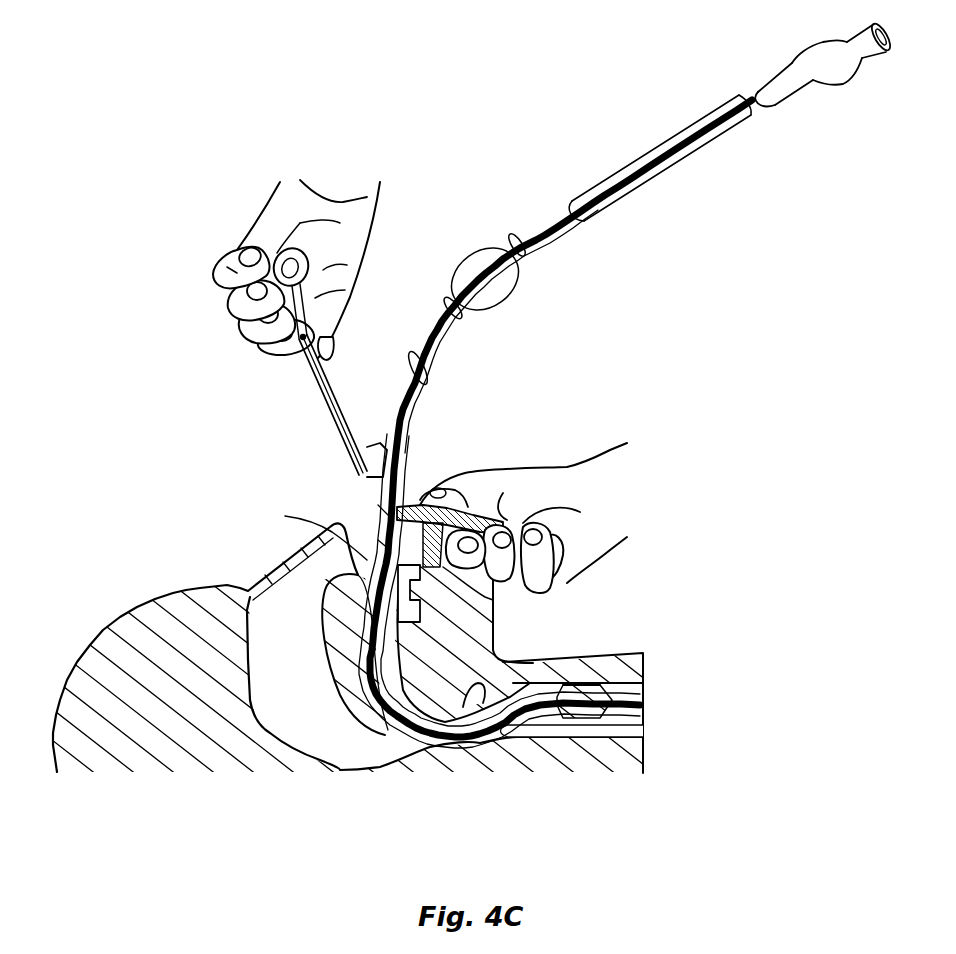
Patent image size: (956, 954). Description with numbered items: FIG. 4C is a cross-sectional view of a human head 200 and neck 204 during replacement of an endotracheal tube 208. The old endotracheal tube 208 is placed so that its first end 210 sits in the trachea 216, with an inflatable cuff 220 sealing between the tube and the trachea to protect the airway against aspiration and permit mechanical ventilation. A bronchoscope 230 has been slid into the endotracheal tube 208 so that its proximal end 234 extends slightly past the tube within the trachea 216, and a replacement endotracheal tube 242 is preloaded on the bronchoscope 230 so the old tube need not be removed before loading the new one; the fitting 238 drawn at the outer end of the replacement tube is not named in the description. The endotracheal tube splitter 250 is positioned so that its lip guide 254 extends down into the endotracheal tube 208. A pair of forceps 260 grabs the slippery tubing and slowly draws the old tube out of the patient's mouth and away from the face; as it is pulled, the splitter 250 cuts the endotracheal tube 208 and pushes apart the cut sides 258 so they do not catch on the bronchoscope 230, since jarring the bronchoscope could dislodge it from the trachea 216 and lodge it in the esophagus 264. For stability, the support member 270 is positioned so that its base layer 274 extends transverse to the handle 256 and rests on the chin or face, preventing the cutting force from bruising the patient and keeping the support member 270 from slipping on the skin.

The human head 200 is at (117, 613).
The neck 204 is at (587, 662).
The endotracheal tube 208 is at (367, 480).
The first end 210 is at (612, 700).
The trachea 216 is at (635, 713).
The inflatable cuff 220 is at (600, 690).
The bronchoscope 230 is at (407, 413).
The proximal end 234 is at (643, 705).
The connector 238 is at (840, 85).
The replacement endotracheal tube 242 is at (620, 169).
The endotracheal tube splitter 250 is at (397, 503).
The lip guide 254 is at (380, 522).
The handle 256 is at (493, 520).
The cut sides 258 is at (393, 440).
The forceps 260 is at (320, 393).
The esophagus 264 is at (540, 735).
The support member 270 is at (493, 595).
The base layer 274 is at (382, 547).